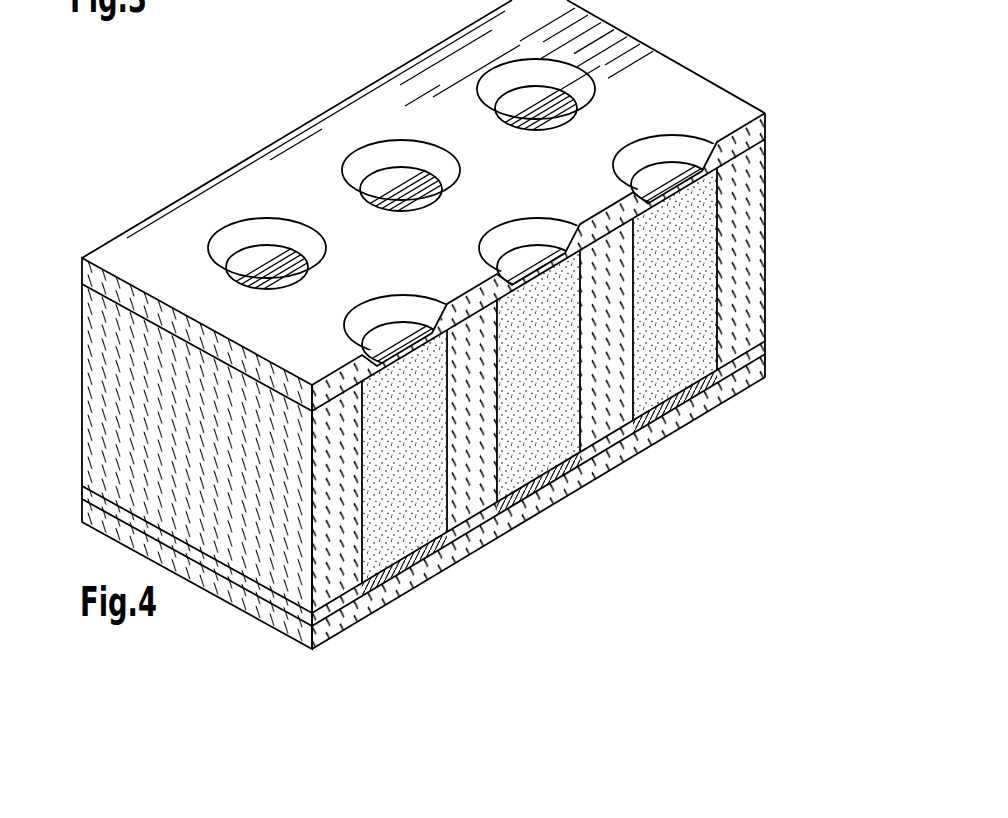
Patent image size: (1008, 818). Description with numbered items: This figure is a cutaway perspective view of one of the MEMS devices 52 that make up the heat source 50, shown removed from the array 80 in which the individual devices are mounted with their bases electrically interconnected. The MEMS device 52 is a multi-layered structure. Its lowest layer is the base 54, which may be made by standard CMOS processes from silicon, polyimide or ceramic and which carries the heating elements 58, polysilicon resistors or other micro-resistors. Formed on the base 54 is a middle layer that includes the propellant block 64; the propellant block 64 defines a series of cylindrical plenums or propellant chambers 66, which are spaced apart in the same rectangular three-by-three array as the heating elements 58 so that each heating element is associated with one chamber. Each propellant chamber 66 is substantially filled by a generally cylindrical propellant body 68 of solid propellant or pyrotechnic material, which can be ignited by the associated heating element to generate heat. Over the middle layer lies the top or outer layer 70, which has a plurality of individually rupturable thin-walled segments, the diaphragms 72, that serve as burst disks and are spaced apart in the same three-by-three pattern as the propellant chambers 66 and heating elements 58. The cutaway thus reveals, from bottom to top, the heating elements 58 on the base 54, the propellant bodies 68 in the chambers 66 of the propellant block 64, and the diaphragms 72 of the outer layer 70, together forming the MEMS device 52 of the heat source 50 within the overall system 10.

In FIG. 4, the device assembly 10 is at (427, 350).
In FIG. 4, the heat source 50 is at (427, 336).
In FIG. 4, the MEMS device 52 is at (115, 553).
In FIG. 4, the base 54 is at (400, 598).
In FIG. 4, the heating elements 58 is at (673, 408).
In FIG. 4, the propellant block 64 is at (738, 293).
In FIG. 4, the propellant chambers 66 is at (715, 233).
In FIG. 4, the propellant bodies 68 is at (398, 400).
In FIG. 4, the outer layer 70 is at (628, 67).
In FIG. 4, the diaphragms 72 is at (527, 103).
In FIG. 3, the array 80 is at (223, 0).